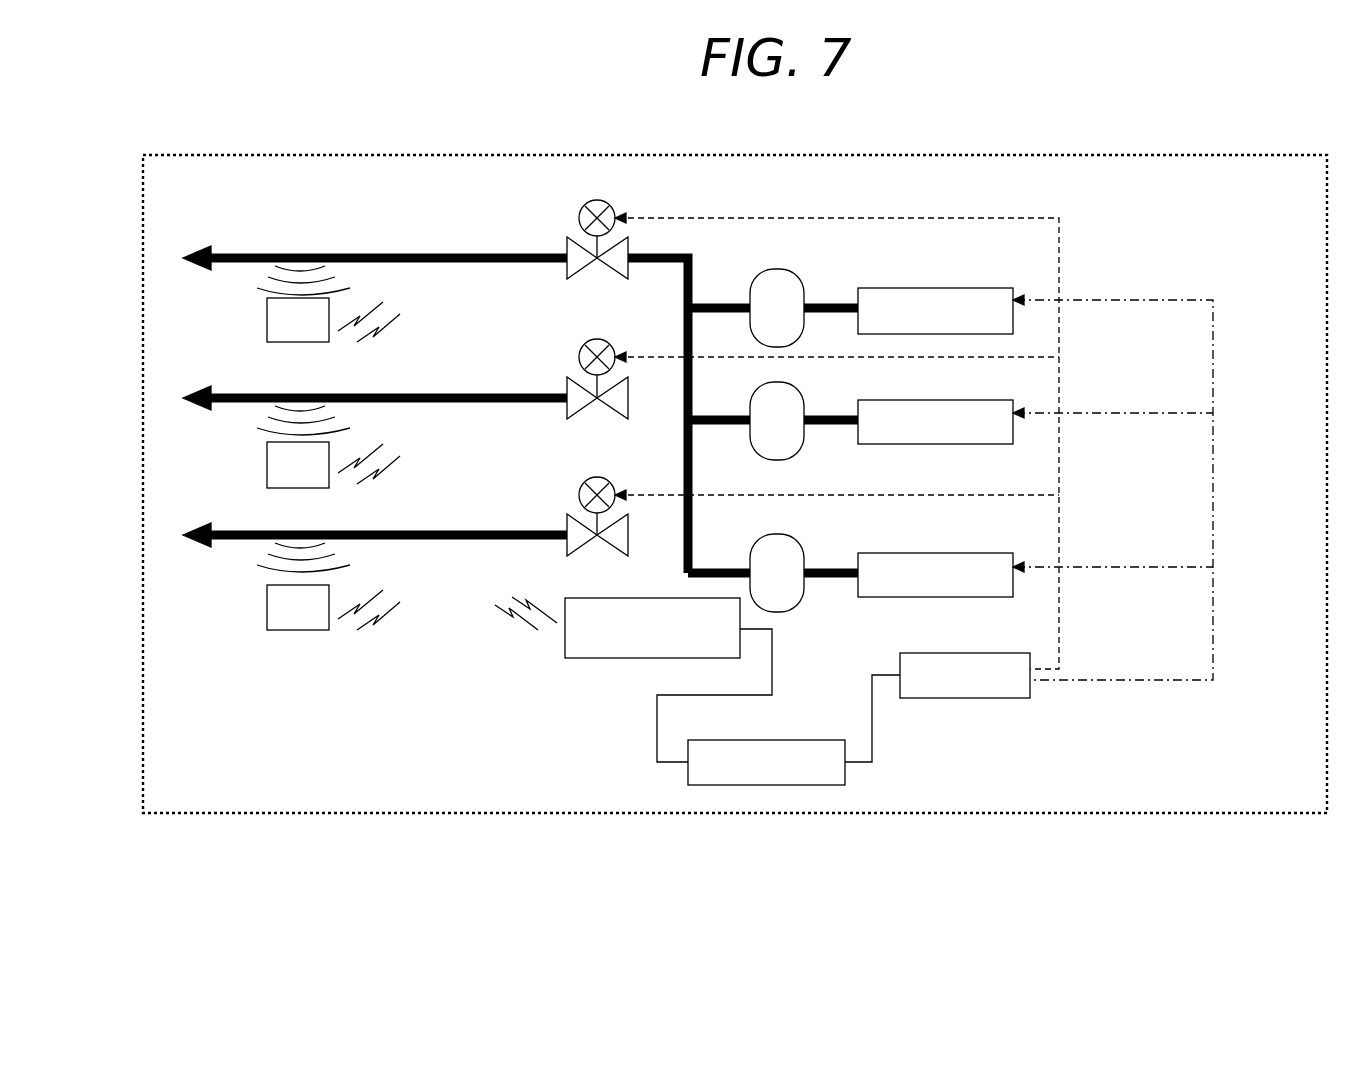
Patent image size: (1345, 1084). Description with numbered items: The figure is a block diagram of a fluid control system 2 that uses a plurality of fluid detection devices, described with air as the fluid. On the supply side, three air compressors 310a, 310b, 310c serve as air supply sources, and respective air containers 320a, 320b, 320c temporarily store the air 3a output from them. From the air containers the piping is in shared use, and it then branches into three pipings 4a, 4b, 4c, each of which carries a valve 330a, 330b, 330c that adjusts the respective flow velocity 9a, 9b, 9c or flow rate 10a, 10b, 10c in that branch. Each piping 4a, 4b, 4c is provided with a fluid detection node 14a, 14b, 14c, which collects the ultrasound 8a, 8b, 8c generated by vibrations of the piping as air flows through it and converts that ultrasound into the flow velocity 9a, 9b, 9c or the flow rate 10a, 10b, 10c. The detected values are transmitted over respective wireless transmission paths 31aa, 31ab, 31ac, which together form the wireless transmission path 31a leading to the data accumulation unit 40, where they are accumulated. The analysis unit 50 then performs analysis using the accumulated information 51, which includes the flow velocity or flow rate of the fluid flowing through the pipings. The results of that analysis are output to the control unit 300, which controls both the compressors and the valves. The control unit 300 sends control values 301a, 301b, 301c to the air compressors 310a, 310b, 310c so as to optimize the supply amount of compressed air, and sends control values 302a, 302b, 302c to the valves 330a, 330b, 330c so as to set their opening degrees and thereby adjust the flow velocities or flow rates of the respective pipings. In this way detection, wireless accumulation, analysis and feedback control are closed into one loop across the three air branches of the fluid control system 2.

The fluid control system 2 is at (1288, 813).
The air 3a is at (684, 432).
The piping 4a is at (330, 256).
The piping 4b is at (330, 396).
The piping 4c is at (330, 533).
The flow velocity 9a is at (300, 256).
The flow rate 10a is at (300, 256).
The flow velocity 9b is at (300, 396).
The flow rate 10b is at (300, 396).
The flow velocity 9c is at (298, 533).
The flow rate 10c is at (298, 533).
The ultrasound 8a is at (348, 290).
The ultrasound 8b is at (348, 430).
The ultrasound 8c is at (348, 567).
The fluid detection node 14a is at (267, 318).
The fluid detection node 14b is at (267, 464).
The fluid detection node 14c is at (267, 611).
The wireless transmission path 31aa is at (360, 340).
The wireless transmission path 31ab is at (360, 482).
The wireless transmission path 31ac is at (360, 628).
The wireless transmission path 31a is at (525, 627).
The valve 330a is at (585, 204).
The valve 330b is at (585, 343).
The valve 330c is at (585, 481).
The control value 302a is at (807, 217).
The control value 302b is at (805, 356).
The control value 302c is at (805, 496).
The air container 320a is at (793, 273).
The air container 320b is at (793, 386).
The air container 320c is at (793, 538).
The air compressor 310a is at (932, 288).
The air compressor 310b is at (932, 400).
The air compressor 310c is at (930, 553).
The control value 301a is at (1107, 300).
The control value 301b is at (1107, 413).
The control value 301c is at (1107, 567).
The data accumulation unit 40 is at (620, 658).
The analysis unit 50 is at (785, 740).
The information 51 is at (872, 712).
The control unit 300 is at (980, 698).